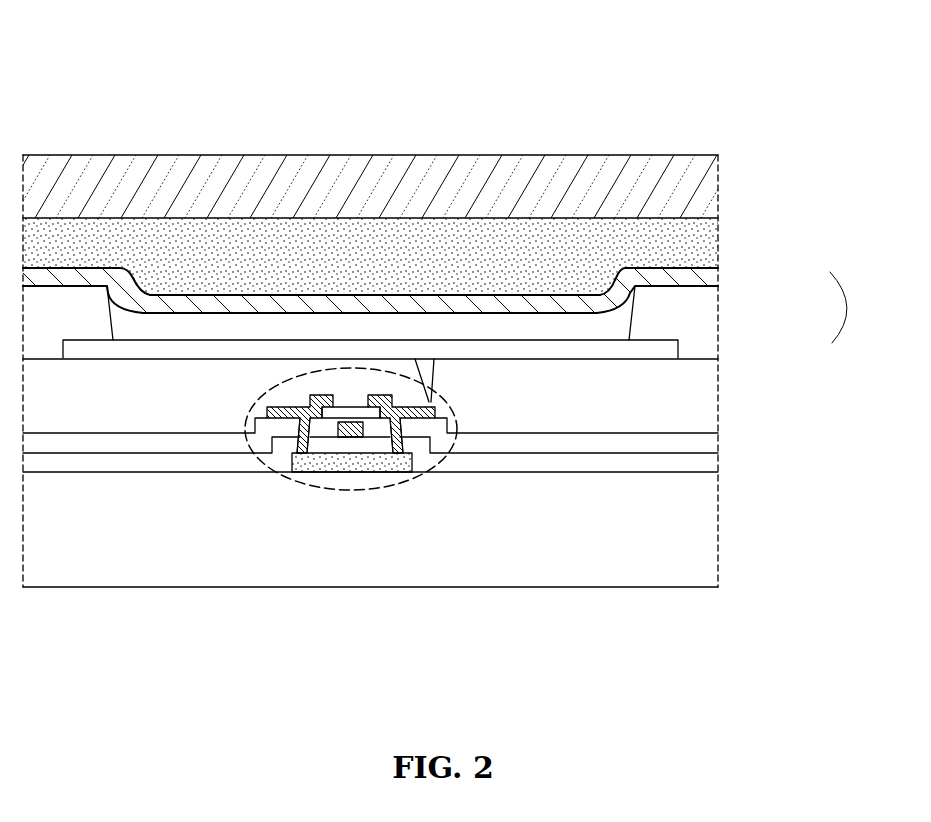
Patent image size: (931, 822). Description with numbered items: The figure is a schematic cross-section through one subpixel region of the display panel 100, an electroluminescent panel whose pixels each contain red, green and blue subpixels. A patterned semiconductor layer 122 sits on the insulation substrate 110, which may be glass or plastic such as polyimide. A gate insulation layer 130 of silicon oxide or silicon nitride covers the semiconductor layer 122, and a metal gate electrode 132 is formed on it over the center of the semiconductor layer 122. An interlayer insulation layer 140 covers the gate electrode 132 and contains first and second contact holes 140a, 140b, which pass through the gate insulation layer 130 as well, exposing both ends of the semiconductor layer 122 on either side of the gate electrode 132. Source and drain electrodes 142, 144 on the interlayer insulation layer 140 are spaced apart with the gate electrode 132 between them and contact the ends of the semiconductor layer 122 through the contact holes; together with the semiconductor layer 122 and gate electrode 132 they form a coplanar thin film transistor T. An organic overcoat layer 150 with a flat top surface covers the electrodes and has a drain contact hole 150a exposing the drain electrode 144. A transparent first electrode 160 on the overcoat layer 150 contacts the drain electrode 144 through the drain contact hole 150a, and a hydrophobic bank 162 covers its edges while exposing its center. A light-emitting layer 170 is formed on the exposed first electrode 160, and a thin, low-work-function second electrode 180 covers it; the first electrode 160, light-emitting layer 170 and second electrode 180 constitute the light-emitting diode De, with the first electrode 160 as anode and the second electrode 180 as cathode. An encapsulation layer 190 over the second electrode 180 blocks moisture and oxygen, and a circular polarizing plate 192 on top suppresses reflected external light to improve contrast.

The display panel 100 is at (635, 128).
The insulation substrate 110 is at (668, 569).
The semiconductor layer 122 is at (327, 455).
The gate insulation layer 130 is at (700, 461).
The gate electrode 132 is at (347, 437).
The interlayer insulation layer 140 is at (700, 443).
The first contact hole 140a is at (302, 452).
The second contact hole 140b is at (397, 452).
The source electrode 142 is at (282, 418).
The drain electrode 144 is at (418, 420).
The overcoat layer 150 is at (700, 403).
The drain contact hole 150a is at (428, 394).
The first electrode 160 is at (655, 352).
The bank 162 is at (55, 315).
The light-emitting layer 170 is at (612, 323).
The second electrode 180 is at (705, 276).
The encapsulation layer 190 is at (703, 245).
The polarizing plate 192 is at (700, 187).
The thin film transistor T is at (248, 447).
The light-emitting diode De is at (854, 307).